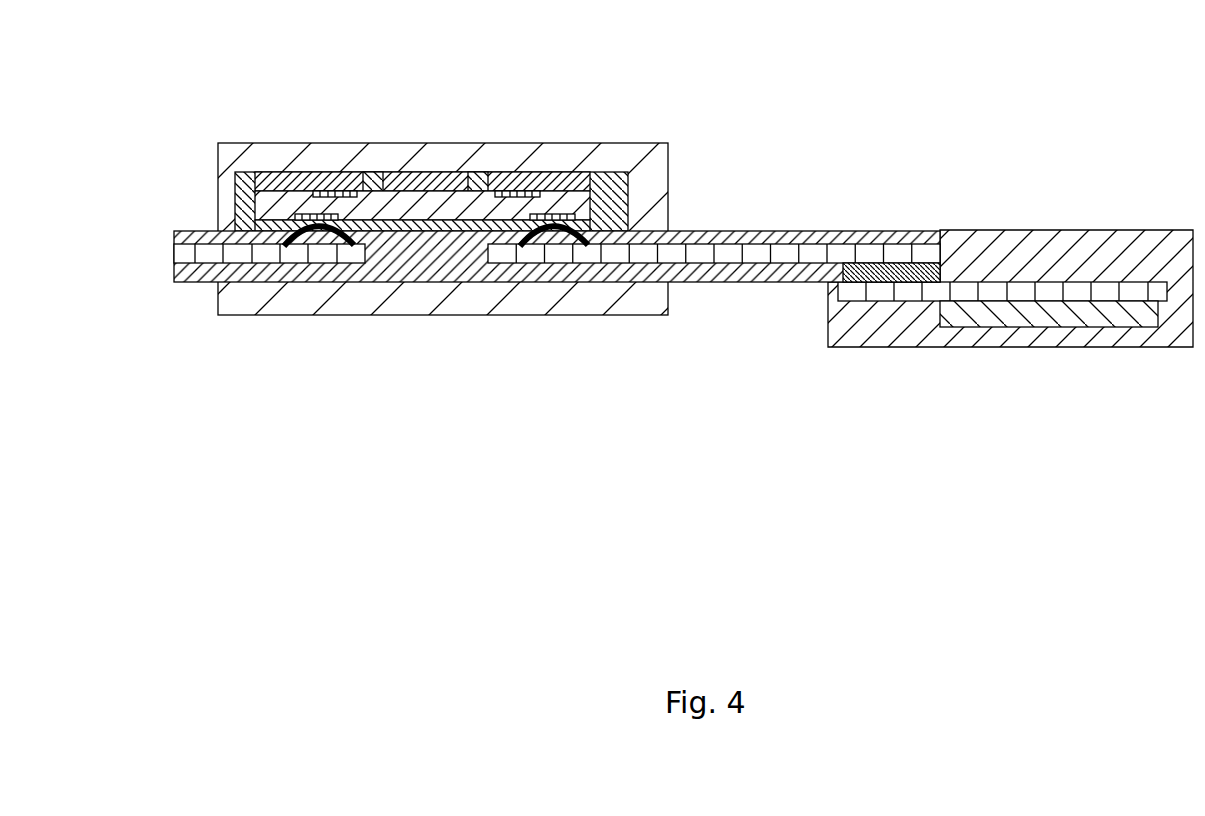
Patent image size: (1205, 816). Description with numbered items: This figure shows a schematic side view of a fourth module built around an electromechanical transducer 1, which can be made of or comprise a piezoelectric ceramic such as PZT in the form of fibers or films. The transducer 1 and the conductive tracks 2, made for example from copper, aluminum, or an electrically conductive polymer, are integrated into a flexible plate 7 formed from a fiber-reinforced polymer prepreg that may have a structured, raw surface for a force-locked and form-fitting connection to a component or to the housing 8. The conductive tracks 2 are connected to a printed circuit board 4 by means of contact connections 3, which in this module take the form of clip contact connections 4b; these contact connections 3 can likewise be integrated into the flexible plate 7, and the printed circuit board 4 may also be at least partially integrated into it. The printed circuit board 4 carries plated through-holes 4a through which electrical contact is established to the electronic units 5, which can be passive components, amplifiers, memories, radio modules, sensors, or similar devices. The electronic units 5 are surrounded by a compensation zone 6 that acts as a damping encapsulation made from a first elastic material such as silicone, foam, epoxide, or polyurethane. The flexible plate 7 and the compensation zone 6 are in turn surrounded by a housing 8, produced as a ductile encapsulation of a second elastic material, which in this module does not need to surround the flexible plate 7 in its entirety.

The electromechanical transducer 1 is at (978, 312).
The conductive tracks 2 is at (320, 255).
The contact connections 3 is at (875, 263).
The printed circuit board 4 is at (383, 210).
The plated through-holes 4a is at (302, 216).
The clip contact connection 4b is at (281, 243).
The electronic units 5 is at (456, 185).
The compensation zone 6 is at (437, 232).
The flexible plate 7 is at (1040, 280).
The housing 8 is at (658, 182).